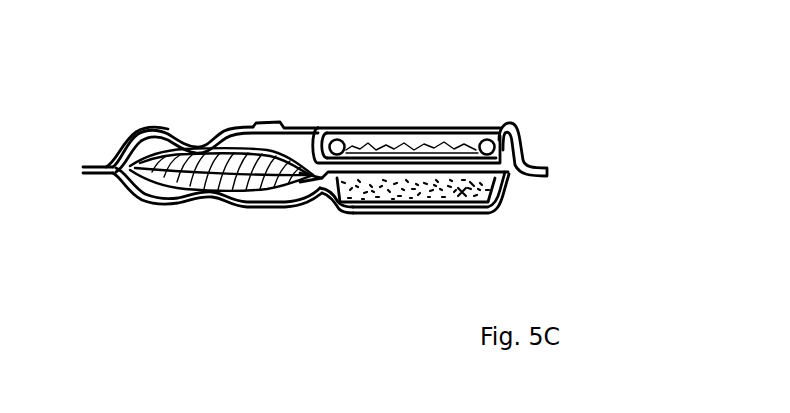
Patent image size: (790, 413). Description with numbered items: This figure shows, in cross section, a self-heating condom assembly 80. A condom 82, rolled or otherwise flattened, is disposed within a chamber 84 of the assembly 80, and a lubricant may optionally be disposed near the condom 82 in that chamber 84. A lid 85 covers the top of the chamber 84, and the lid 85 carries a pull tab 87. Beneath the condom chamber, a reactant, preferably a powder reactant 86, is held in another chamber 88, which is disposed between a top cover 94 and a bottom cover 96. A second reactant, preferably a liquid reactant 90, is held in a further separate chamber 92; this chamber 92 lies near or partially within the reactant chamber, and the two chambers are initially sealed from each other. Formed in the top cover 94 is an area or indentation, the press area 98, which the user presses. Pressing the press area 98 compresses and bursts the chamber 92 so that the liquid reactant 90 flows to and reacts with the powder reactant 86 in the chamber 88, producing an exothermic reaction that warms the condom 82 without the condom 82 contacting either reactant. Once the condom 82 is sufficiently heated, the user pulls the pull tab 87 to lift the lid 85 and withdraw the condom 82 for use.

The assembly 80 is at (560, 124).
The condom 82 is at (351, 138).
The chamber 84 is at (432, 130).
The lid 85 is at (387, 126).
The powder reactant 86 is at (488, 212).
The pull tab 87 is at (268, 125).
The chamber 88 is at (347, 204).
The liquid reactant 90 is at (152, 197).
The chamber 92 is at (200, 193).
The top cover 94 is at (135, 138).
The bottom cover 96 is at (162, 205).
The press area 98 is at (195, 140).